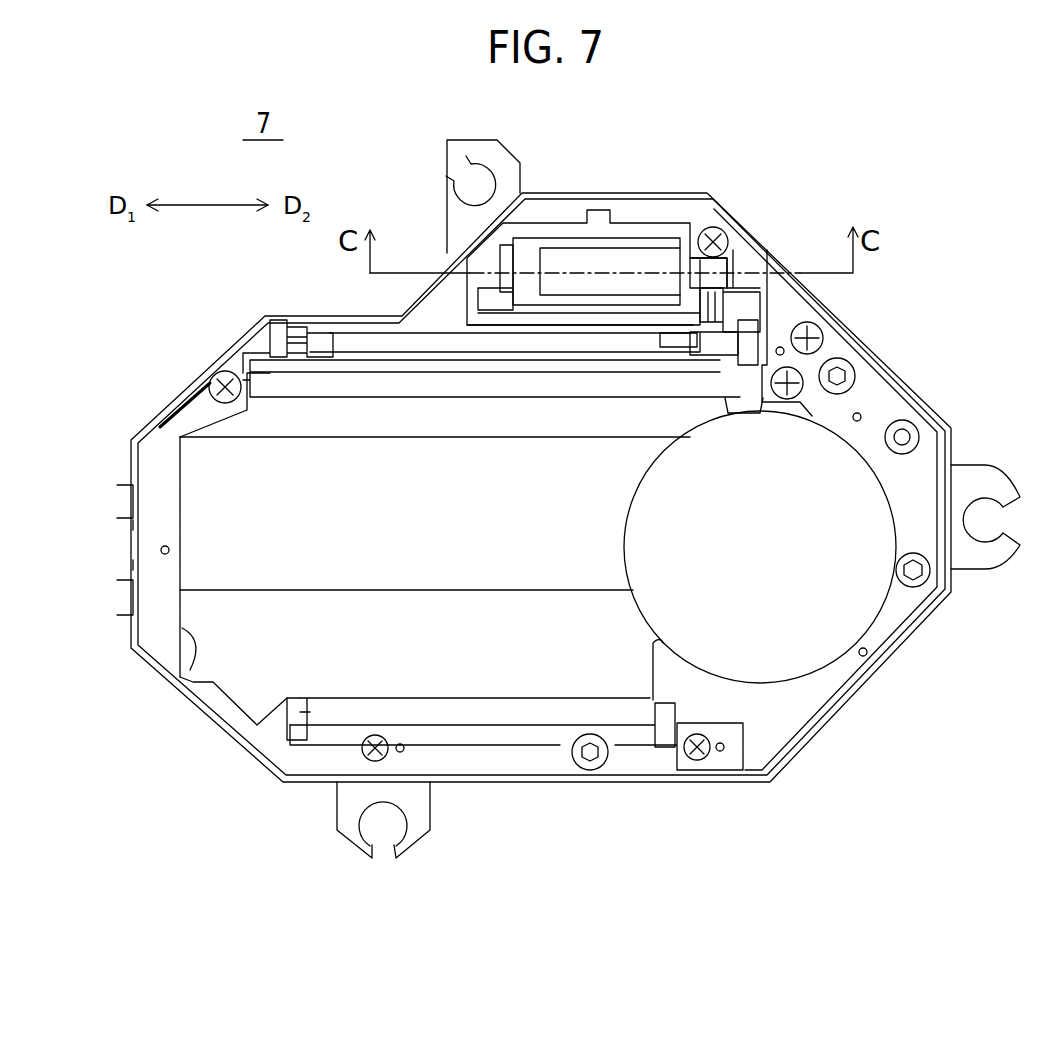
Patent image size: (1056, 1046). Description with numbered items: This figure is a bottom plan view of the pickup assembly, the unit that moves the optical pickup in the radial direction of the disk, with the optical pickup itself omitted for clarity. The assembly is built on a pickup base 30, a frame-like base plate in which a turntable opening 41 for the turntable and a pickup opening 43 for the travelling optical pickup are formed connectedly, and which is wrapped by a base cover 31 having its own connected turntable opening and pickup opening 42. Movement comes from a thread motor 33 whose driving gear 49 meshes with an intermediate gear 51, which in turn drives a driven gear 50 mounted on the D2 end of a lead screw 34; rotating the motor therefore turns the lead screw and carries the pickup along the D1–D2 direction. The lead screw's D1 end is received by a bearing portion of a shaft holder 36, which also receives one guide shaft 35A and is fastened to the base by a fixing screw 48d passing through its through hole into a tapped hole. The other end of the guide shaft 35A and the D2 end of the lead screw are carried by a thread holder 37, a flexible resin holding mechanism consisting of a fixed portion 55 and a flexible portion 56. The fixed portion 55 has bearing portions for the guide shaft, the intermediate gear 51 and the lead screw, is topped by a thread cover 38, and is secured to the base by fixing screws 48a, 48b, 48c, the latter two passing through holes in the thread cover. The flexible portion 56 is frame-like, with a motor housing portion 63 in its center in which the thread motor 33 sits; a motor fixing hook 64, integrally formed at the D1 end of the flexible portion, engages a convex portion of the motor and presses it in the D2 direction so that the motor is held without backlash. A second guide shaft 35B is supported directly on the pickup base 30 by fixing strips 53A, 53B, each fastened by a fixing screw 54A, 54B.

The pickup base 30 is at (847, 690).
The base cover 31 is at (848, 735).
The thread motor 33 is at (623, 257).
The lead screw 34 is at (370, 340).
The guide shaft 35A is at (447, 388).
The guide shaft 35B is at (520, 713).
The shaft holder 36 is at (267, 323).
The thread holder 37 is at (673, 213).
The thread cover 38 is at (838, 298).
The turntable opening 41 is at (869, 600).
The pickup opening 42 is at (306, 592).
The pickup opening 43 is at (182, 675).
The fixing screw 48a is at (735, 248).
The fixing screw 48b is at (827, 313).
The fixing screw 48c is at (800, 378).
The fixing screw 48d is at (215, 370).
The driving gear 49 is at (710, 270).
The driven gear 50 is at (747, 362).
The intermediate gear 51 is at (743, 303).
The fixing strip 53A is at (660, 760).
The fixing strip 53B is at (440, 753).
The fixing screw 54A is at (710, 750).
The fixing screw 54B is at (363, 750).
The fixed portion 55 is at (745, 250).
The flexible portion 56 is at (590, 315).
The motor housing portion 63 is at (563, 247).
The motor fixing hook 64 is at (490, 253).